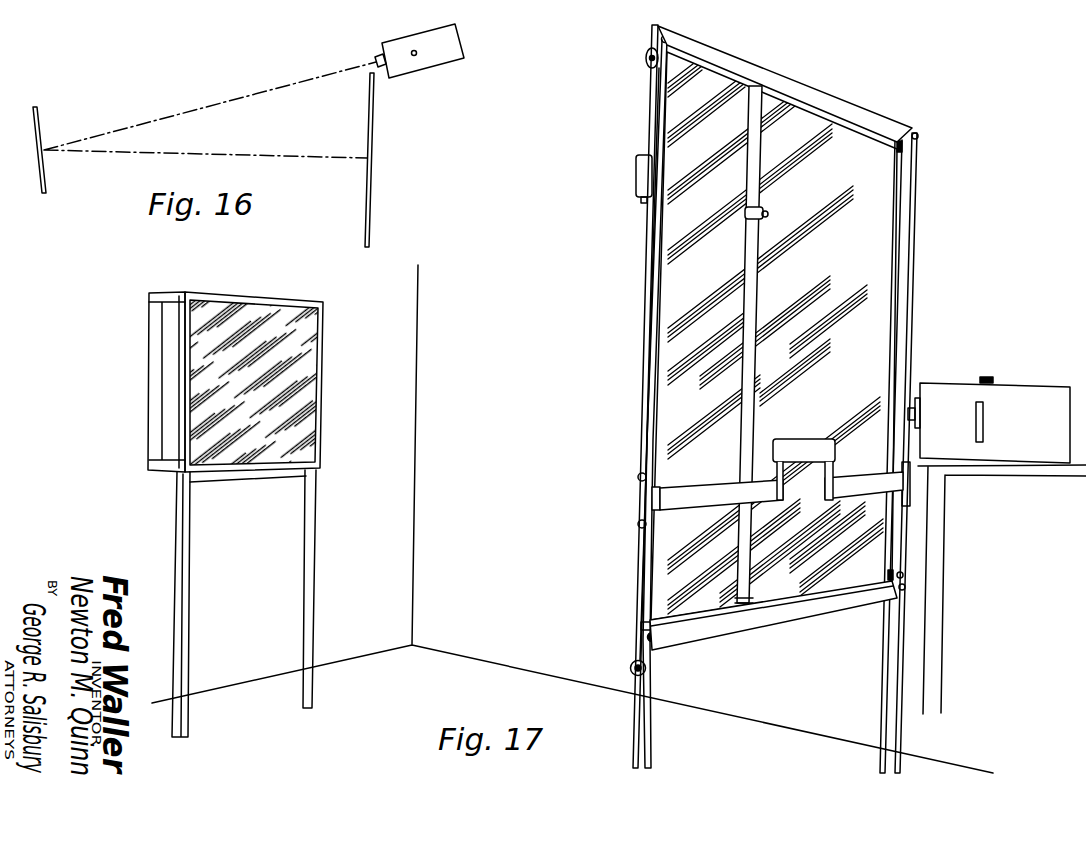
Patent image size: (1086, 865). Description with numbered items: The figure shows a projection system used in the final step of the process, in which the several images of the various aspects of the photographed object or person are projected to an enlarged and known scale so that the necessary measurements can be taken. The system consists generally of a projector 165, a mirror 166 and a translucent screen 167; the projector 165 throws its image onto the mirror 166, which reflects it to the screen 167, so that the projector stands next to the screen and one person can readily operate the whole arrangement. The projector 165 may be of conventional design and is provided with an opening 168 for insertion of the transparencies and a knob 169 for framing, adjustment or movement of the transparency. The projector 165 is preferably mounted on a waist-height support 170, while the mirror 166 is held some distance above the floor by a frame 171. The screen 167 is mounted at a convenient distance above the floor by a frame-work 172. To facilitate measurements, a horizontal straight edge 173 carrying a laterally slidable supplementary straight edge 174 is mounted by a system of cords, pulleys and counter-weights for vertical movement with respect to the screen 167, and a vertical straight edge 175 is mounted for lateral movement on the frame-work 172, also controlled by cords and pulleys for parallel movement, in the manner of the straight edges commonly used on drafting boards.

In FIG. 16, the projector 165 is at (405, 40).
In FIG. 17, the projector 165 is at (1032, 398).
In FIG. 16, the mirror 166 is at (38, 113).
In FIG. 17, the mirror 166 is at (310, 412).
In FIG. 16, the translucent screen 167 is at (375, 131).
In FIG. 17, the translucent screen 167 is at (660, 353).
In FIG. 17, the opening 168 is at (976, 413).
In FIG. 16, the knob 169 is at (416, 56).
In FIG. 17, the knob 169 is at (987, 377).
In FIG. 17, the waist-height support 170 is at (997, 472).
In FIG. 17, the frame 171 is at (190, 561).
In FIG. 17, the frame-work 172 is at (833, 103).
In FIG. 17, the horizontal straight edge 173 is at (707, 493).
In FIG. 17, the supplementary straight edge 174 is at (798, 440).
In FIG. 17, the vertical straight edge 175 is at (752, 272).